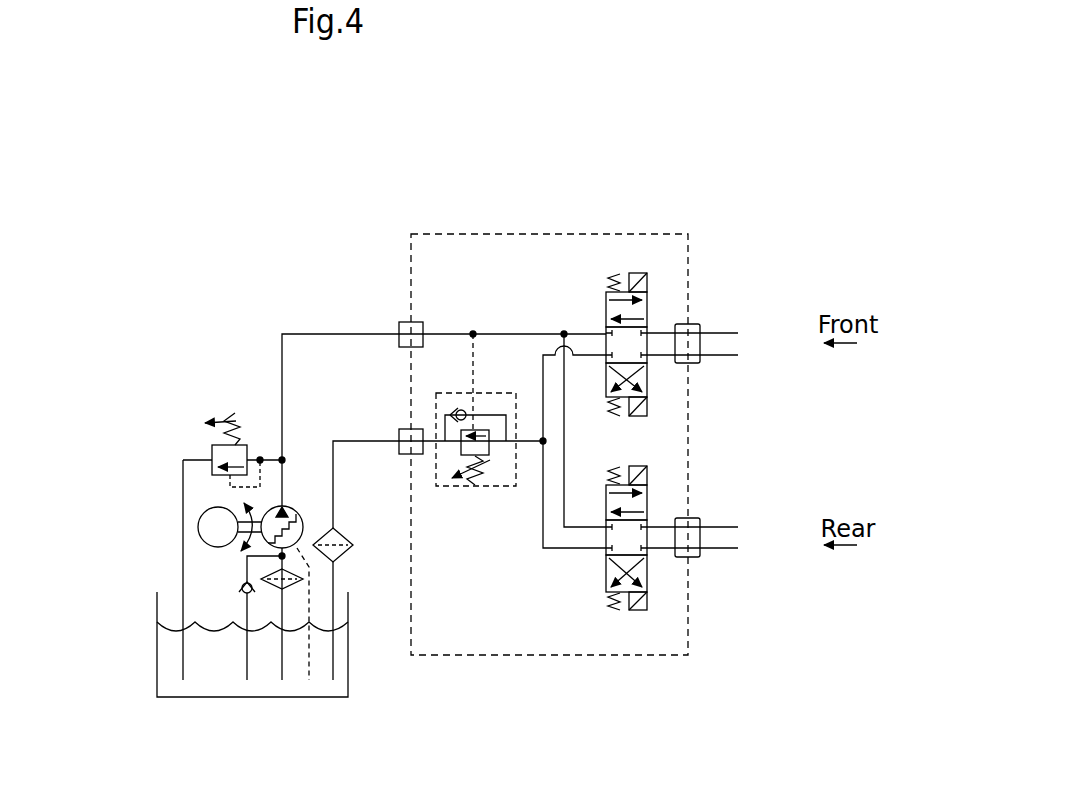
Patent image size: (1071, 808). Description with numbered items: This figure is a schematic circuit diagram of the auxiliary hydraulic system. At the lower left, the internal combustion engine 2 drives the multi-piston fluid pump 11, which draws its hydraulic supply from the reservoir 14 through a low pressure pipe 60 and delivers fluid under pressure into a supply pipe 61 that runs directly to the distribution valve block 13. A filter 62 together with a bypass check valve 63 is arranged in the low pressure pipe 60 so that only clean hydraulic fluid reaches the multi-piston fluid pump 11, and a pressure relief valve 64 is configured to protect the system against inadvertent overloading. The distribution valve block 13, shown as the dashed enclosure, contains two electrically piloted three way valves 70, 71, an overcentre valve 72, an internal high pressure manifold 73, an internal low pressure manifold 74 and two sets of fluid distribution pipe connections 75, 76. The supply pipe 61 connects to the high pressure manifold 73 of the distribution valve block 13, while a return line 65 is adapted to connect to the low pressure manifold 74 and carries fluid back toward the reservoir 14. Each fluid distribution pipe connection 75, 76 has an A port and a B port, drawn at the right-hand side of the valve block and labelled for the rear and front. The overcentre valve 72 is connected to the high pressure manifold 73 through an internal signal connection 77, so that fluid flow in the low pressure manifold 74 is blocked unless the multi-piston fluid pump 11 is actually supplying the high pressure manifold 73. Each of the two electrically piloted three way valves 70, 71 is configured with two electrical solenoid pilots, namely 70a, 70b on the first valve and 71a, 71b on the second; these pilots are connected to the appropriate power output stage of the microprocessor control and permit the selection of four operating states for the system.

The internal combustion engine 2 is at (200, 517).
The multi-piston fluid pump 11 is at (265, 540).
The distribution valve block 13 is at (547, 231).
The reservoir 14 is at (157, 661).
The low pressure pipe 60 is at (297, 560).
The supply pipe 61 is at (338, 334).
The filter 62 is at (278, 592).
The bypass check valve 63 is at (240, 595).
The pressure relief valve 64 is at (226, 412).
The return line 65 is at (372, 440).
The electrically piloted three way valve 70 is at (700, 537).
The electrical solenoid pilot 70a is at (647, 472).
The electrical solenoid pilot 70b is at (647, 596).
The electrically piloted three way valve 71 is at (683, 303).
The electrical solenoid pilot 71a is at (638, 272).
The electrical solenoid pilot 71b is at (647, 405).
The overcentre valve 72 is at (485, 488).
The internal high pressure manifold 73 is at (593, 528).
The internal low pressure manifold 74 is at (570, 550).
The fluid distribution pipe connection 75 is at (700, 540).
The fluid distribution pipe connection 76 is at (700, 345).
The internal signal connection 77 is at (472, 362).